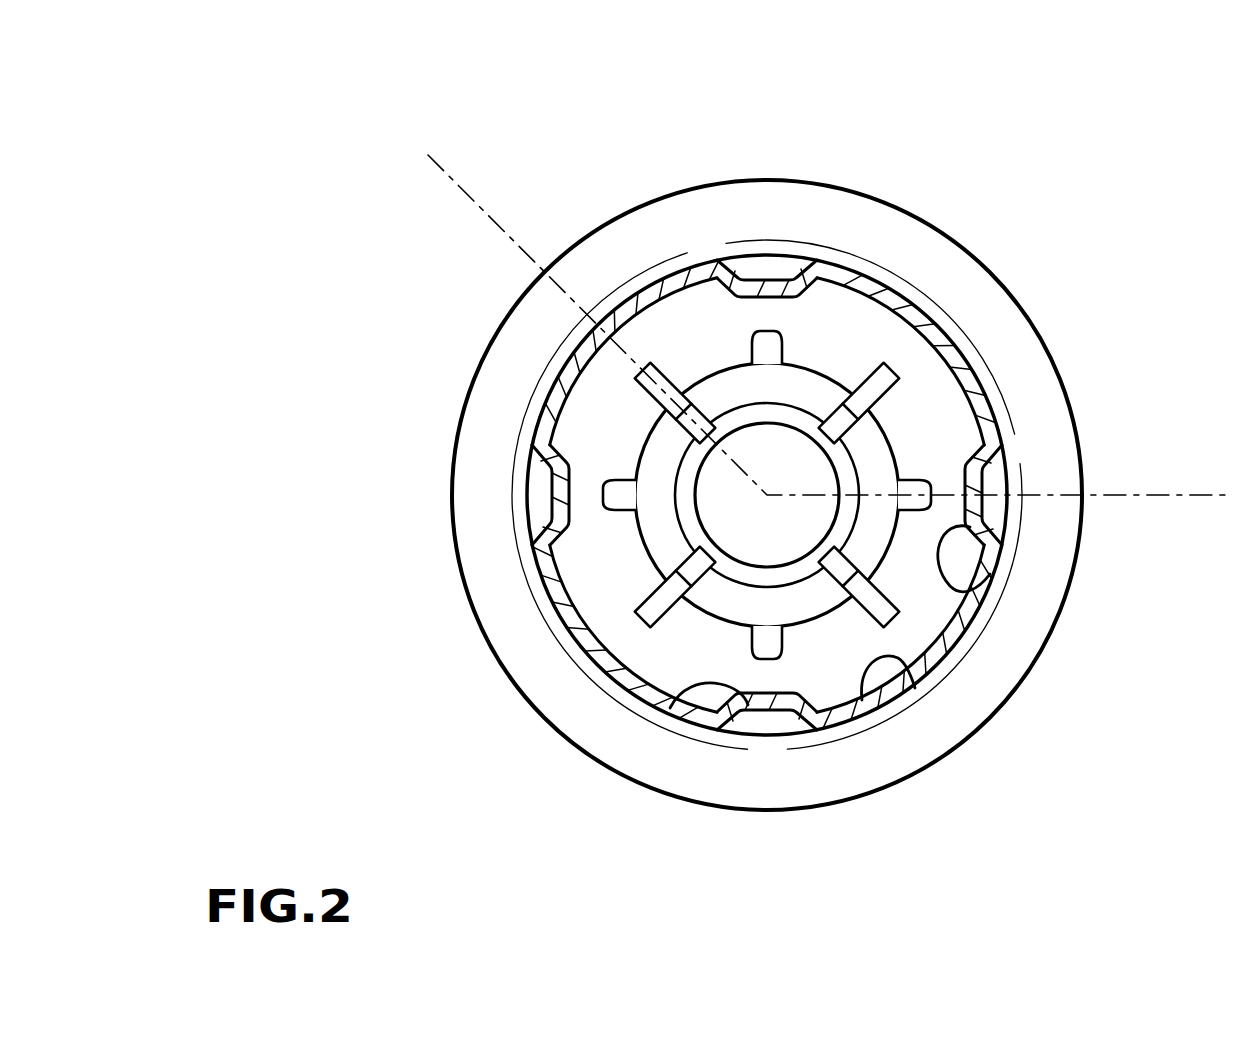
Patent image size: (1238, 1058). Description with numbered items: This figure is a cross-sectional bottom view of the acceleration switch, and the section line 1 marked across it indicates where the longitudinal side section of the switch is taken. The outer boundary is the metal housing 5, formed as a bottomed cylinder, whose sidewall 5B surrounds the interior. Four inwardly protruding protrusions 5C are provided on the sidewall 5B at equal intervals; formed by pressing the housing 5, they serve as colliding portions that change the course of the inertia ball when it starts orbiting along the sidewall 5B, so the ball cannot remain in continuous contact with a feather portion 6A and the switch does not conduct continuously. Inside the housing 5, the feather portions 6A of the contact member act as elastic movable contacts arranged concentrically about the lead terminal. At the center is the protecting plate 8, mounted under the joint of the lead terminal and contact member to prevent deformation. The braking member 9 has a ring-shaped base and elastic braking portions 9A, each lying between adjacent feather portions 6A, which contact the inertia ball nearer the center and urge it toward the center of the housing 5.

The section line 1- 1 is at (468, 187).
The housing 5 is at (960, 270).
The sidewall 5B is at (873, 690).
The protrusion 5C is at (677, 687).
The feather portion 6A is at (647, 602).
The protecting plate 8 is at (728, 512).
The braking member 9 is at (653, 453).
The braking portion 9A is at (790, 335).